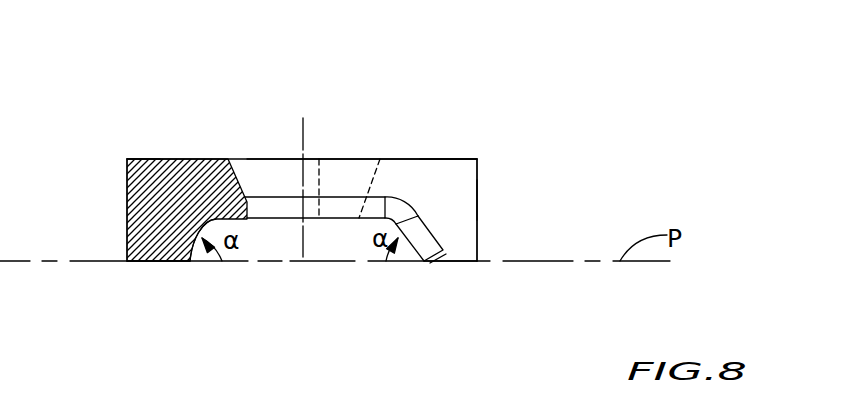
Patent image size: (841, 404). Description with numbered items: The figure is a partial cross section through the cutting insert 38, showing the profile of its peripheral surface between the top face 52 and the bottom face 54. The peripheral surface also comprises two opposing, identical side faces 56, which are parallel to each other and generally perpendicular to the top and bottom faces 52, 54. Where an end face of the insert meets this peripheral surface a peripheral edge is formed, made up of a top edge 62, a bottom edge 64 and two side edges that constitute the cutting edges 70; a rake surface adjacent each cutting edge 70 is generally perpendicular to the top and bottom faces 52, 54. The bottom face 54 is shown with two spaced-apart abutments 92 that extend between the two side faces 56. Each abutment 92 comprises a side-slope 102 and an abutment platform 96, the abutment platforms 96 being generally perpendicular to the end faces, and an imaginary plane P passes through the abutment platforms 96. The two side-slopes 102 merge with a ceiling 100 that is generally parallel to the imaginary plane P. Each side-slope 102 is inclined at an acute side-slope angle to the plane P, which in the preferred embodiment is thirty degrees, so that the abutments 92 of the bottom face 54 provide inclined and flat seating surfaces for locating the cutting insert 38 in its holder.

The cutting insert 38 is at (595, 137).
The top face 52 is at (400, 145).
The bottom face 54 is at (147, 278).
The side faces 56 is at (475, 198).
The top edge 62 is at (127, 160).
The bottom edge 64 is at (127, 264).
The cutting edges 70 is at (478, 172).
The abutments 92 is at (188, 263).
The abutment platform 96 is at (172, 263).
The ceiling 100 is at (337, 220).
The side-slope 102 is at (395, 262).